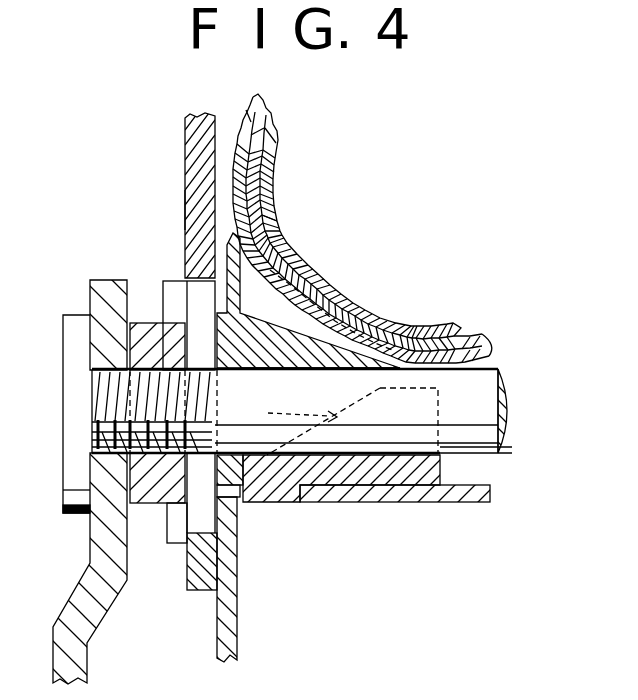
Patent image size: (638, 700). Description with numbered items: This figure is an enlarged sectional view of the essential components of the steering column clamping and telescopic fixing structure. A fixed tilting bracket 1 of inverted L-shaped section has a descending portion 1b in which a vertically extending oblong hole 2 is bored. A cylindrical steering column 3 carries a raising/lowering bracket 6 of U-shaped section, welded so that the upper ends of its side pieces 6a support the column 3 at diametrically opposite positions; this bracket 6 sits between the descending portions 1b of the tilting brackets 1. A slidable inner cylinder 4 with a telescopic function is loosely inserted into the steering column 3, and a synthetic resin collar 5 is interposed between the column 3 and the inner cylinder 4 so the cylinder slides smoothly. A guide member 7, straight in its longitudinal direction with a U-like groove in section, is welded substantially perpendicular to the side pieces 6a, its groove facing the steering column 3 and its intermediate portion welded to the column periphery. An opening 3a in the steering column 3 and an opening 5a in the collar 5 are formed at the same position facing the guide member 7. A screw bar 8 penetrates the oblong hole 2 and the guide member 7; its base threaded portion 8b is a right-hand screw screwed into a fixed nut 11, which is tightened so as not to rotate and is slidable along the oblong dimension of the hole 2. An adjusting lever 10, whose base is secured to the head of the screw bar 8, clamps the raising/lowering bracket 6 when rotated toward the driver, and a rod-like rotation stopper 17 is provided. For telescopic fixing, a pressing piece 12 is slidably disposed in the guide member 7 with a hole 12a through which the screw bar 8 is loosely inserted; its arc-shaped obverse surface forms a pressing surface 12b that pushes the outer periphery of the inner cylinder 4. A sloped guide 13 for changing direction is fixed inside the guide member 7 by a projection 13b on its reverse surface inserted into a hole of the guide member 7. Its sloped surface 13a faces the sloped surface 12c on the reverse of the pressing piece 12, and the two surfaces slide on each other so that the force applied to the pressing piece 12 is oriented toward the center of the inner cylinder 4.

The tilting bracket 1 is at (183, 170).
The descending portion 1b is at (185, 208).
The oblong hole 2 is at (202, 317).
The steering column 3 is at (497, 336).
The opening 3a is at (397, 357).
The slidable inner cylinder 4 is at (278, 207).
The collar 5 is at (472, 320).
The opening 5a is at (292, 282).
The raising/lowering bracket 6 is at (242, 620).
The side piece 6a is at (240, 573).
The guide member 7 is at (470, 503).
The screw bar 8 is at (505, 458).
The base threaded portion 8b is at (112, 418).
The adjusting lever 10 is at (90, 587).
The fixed nut 11 is at (160, 505).
The pressing piece 12 is at (255, 305).
The hole 12a is at (272, 372).
The pressing surface 12b is at (362, 291).
The sloped surface 12c is at (343, 413).
The sloped guide 13 is at (444, 438).
The sloped surface 13a is at (283, 410).
The projection 13b is at (272, 503).
The rotation stopper 17 is at (180, 545).